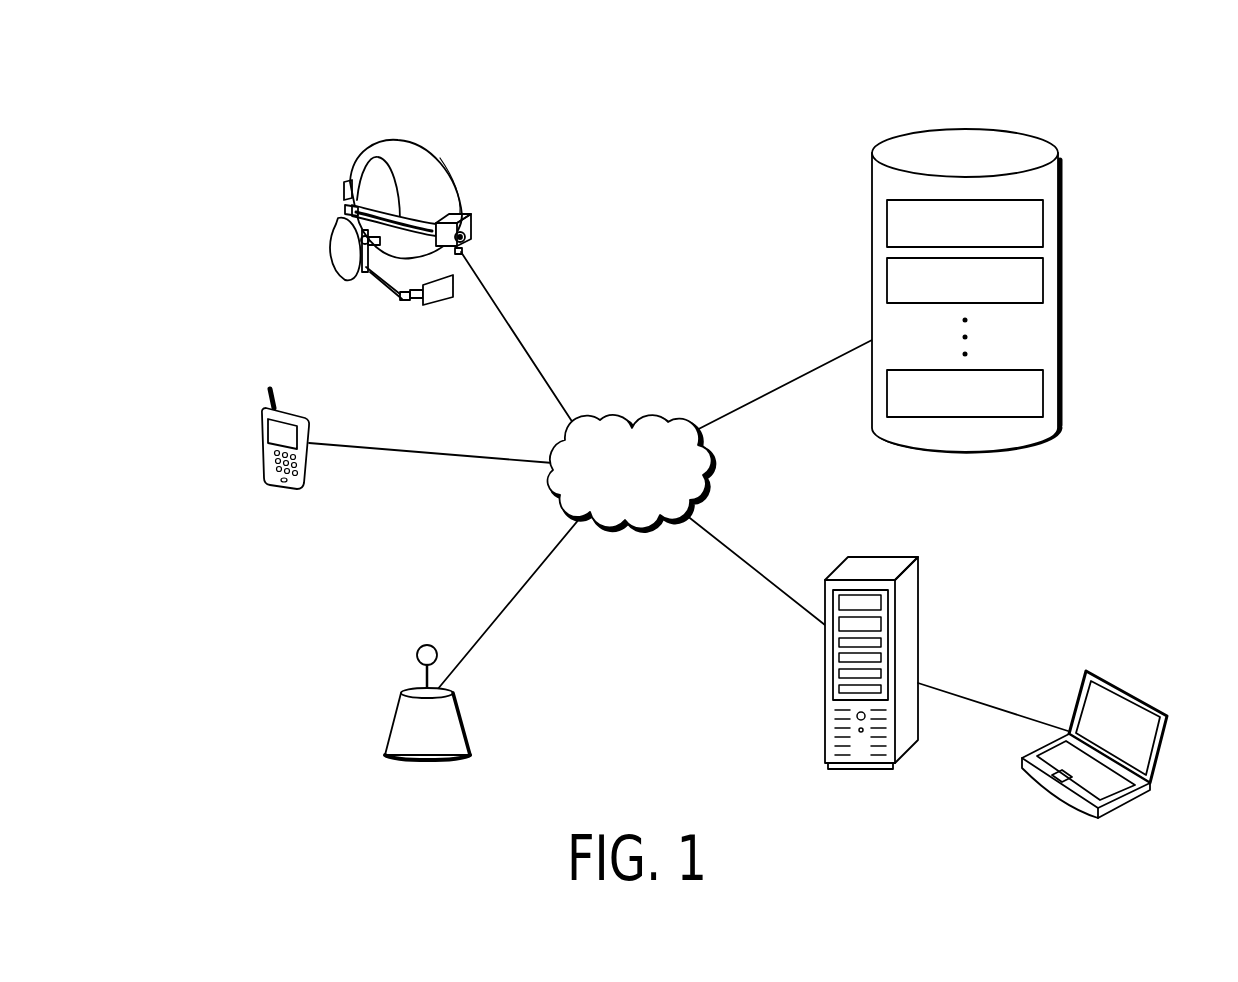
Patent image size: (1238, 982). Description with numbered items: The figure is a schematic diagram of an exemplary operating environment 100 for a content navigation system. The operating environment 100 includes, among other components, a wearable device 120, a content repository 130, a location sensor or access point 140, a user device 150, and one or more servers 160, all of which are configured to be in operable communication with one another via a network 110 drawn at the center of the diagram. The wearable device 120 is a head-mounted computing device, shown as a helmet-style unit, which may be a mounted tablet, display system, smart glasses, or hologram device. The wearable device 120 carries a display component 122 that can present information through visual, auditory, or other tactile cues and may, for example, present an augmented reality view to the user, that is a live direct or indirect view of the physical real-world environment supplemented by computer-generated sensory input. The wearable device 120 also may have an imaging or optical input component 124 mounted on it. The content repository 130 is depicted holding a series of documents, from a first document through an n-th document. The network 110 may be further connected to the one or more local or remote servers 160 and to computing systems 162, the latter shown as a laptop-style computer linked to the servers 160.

The operating environment 100 is at (165, 113).
The network 110 is at (706, 470).
The wearable device 120 is at (433, 234).
The display component 122 is at (440, 307).
The imaging or optical input component 124 is at (474, 234).
The content repository 130 is at (872, 193).
The location sensor or access point 140 is at (416, 765).
The user device 150 is at (262, 440).
The servers 160 is at (825, 700).
The computing systems 162 is at (1122, 684).